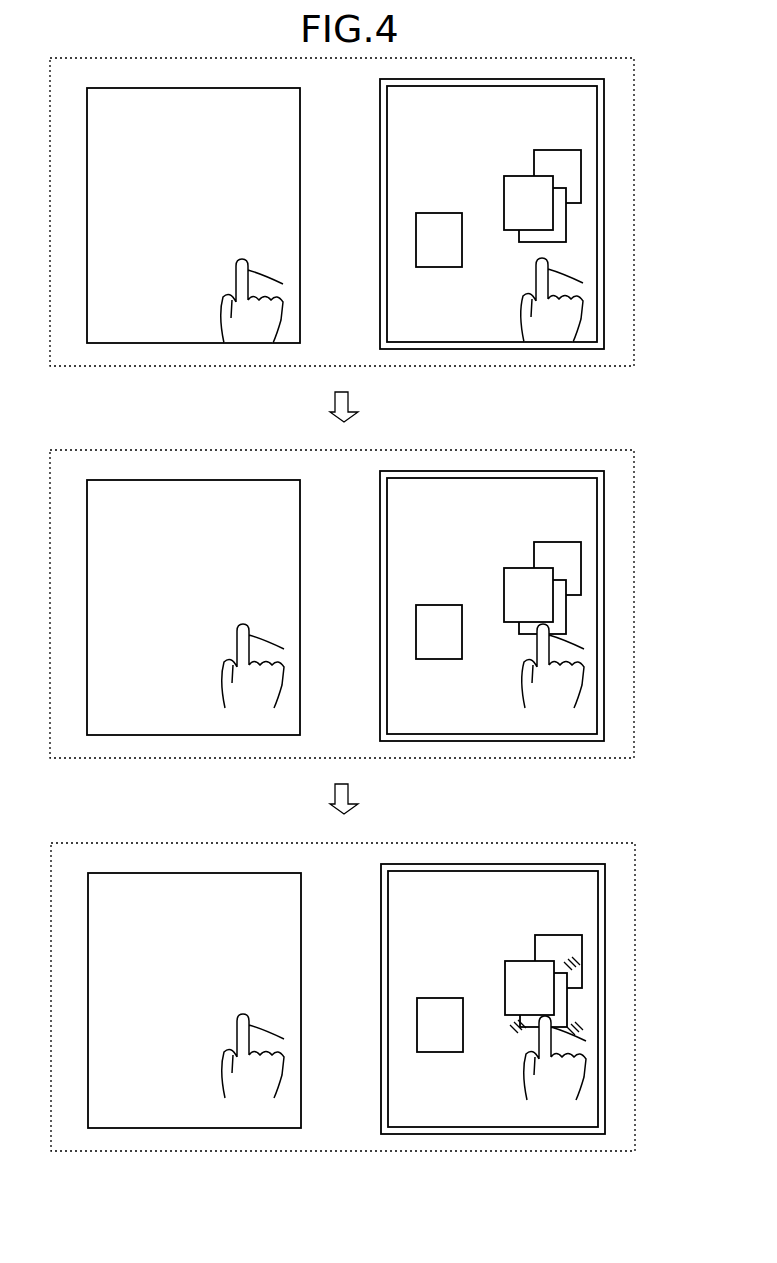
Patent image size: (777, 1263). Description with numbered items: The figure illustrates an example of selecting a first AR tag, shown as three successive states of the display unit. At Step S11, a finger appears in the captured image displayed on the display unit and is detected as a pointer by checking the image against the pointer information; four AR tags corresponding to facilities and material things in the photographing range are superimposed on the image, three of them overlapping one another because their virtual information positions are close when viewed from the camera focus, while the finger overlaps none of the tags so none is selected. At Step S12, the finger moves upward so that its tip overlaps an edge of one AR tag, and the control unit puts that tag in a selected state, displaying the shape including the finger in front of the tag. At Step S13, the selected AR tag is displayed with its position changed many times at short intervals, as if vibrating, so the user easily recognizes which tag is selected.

The Step S11 is at (634, 118).
The Step S12 is at (375, 604).
The Step S13 is at (376, 997).